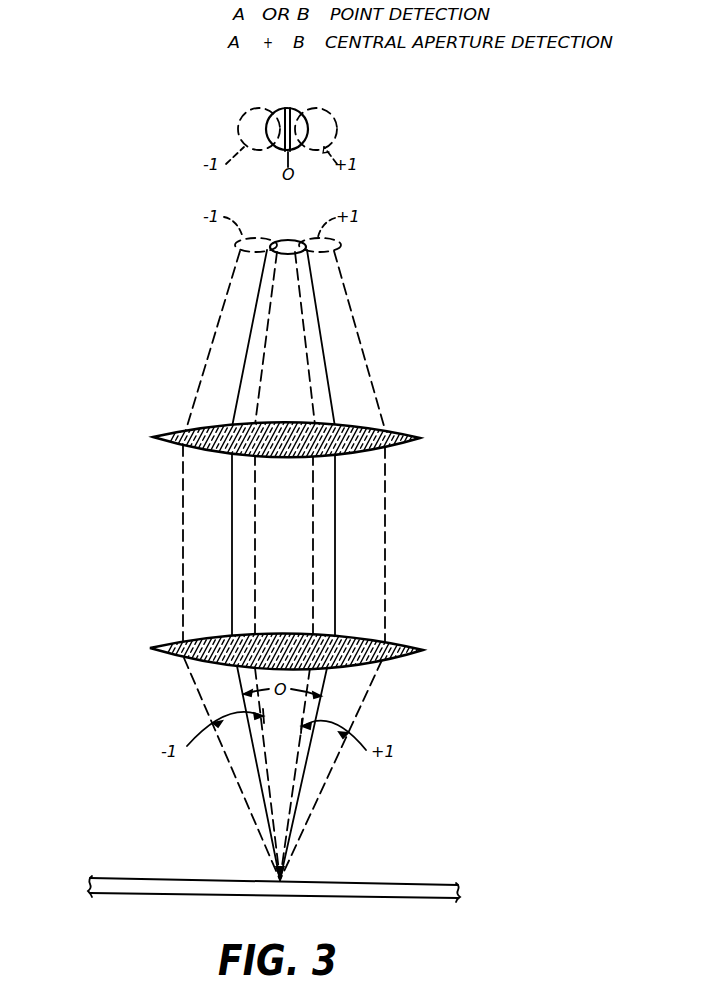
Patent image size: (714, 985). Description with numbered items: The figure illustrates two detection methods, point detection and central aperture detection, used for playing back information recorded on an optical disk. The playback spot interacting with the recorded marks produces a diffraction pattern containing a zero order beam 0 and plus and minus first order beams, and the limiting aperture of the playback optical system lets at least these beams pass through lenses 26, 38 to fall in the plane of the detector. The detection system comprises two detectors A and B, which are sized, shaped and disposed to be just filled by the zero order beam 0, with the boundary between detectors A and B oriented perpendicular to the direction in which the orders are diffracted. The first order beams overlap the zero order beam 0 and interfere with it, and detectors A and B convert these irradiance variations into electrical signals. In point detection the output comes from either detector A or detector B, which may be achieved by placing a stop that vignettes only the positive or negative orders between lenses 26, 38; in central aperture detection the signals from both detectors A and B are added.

The lens 38 is at (406, 438).
The lens 26 is at (412, 649).
The detector A is at (280, 112).
The detector B is at (294, 112).
The zero order beam 0 is at (290, 240).